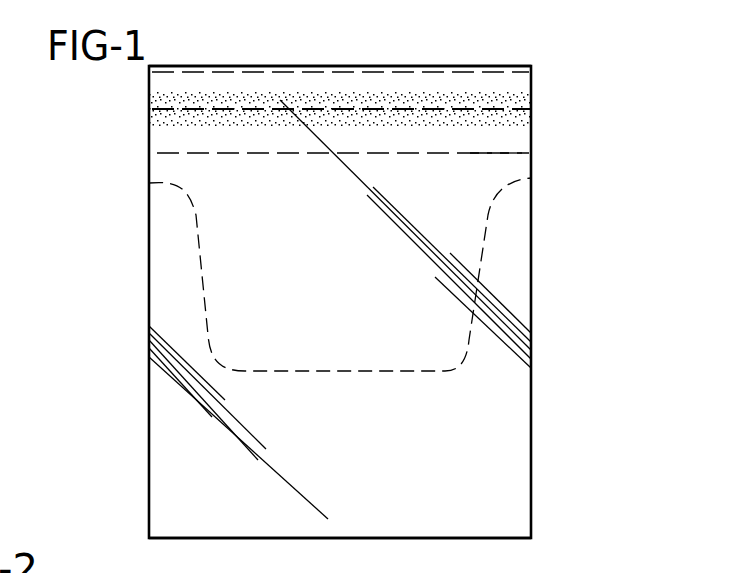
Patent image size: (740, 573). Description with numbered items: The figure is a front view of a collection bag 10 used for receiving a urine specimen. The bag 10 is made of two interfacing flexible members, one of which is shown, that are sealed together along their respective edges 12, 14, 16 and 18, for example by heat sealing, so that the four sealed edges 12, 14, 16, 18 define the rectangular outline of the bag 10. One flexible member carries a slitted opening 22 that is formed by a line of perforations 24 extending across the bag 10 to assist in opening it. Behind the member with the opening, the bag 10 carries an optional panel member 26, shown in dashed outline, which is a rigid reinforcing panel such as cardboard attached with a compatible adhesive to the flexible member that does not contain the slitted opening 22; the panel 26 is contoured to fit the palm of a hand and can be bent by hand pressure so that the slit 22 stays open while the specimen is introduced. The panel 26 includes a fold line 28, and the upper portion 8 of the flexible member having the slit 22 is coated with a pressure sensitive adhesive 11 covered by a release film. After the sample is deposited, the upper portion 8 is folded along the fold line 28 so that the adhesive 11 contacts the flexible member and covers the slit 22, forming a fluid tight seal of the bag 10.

The bag 10 is at (566, 207).
The upper portion 8 is at (532, 98).
The edge 18 is at (279, 66).
The pressure sensitive adhesive 11 is at (386, 88).
The fold line 28 is at (190, 110).
The line of perforations 24 is at (171, 151).
The slitted opening 22 is at (498, 153).
The panel member 26 is at (186, 207).
The edge 12 is at (533, 357).
The edge 16 is at (148, 415).
The edge 14 is at (448, 538).